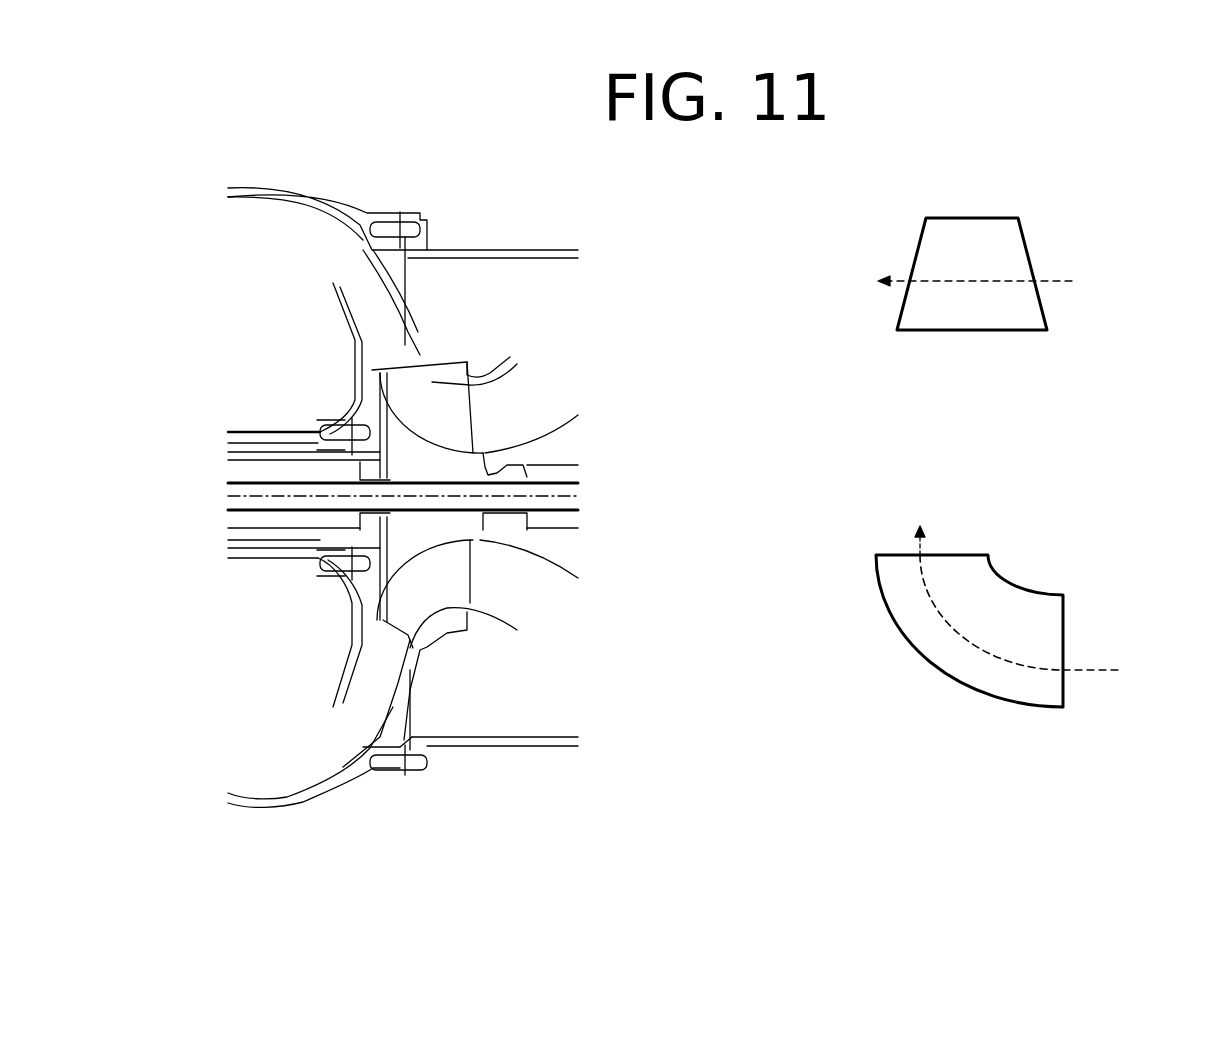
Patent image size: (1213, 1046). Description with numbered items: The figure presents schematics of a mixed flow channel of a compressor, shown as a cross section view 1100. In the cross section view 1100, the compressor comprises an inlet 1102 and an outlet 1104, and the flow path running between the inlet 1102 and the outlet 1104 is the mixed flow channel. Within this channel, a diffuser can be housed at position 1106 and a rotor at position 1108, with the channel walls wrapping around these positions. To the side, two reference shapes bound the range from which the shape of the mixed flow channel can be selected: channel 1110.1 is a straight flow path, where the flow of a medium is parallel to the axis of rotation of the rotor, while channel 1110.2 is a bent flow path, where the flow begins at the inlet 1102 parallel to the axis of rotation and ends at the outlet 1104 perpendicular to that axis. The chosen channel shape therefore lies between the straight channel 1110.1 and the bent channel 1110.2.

The cross section view 1100 is at (403, 500).
The inlet 1102 is at (493, 498).
The outlet 1104 is at (304, 490).
The diffuser position 1106 is at (365, 695).
The rotor position 1108 is at (428, 394).
The channel 1110.1 is at (1010, 380).
The channel 1110.2 is at (1028, 758).